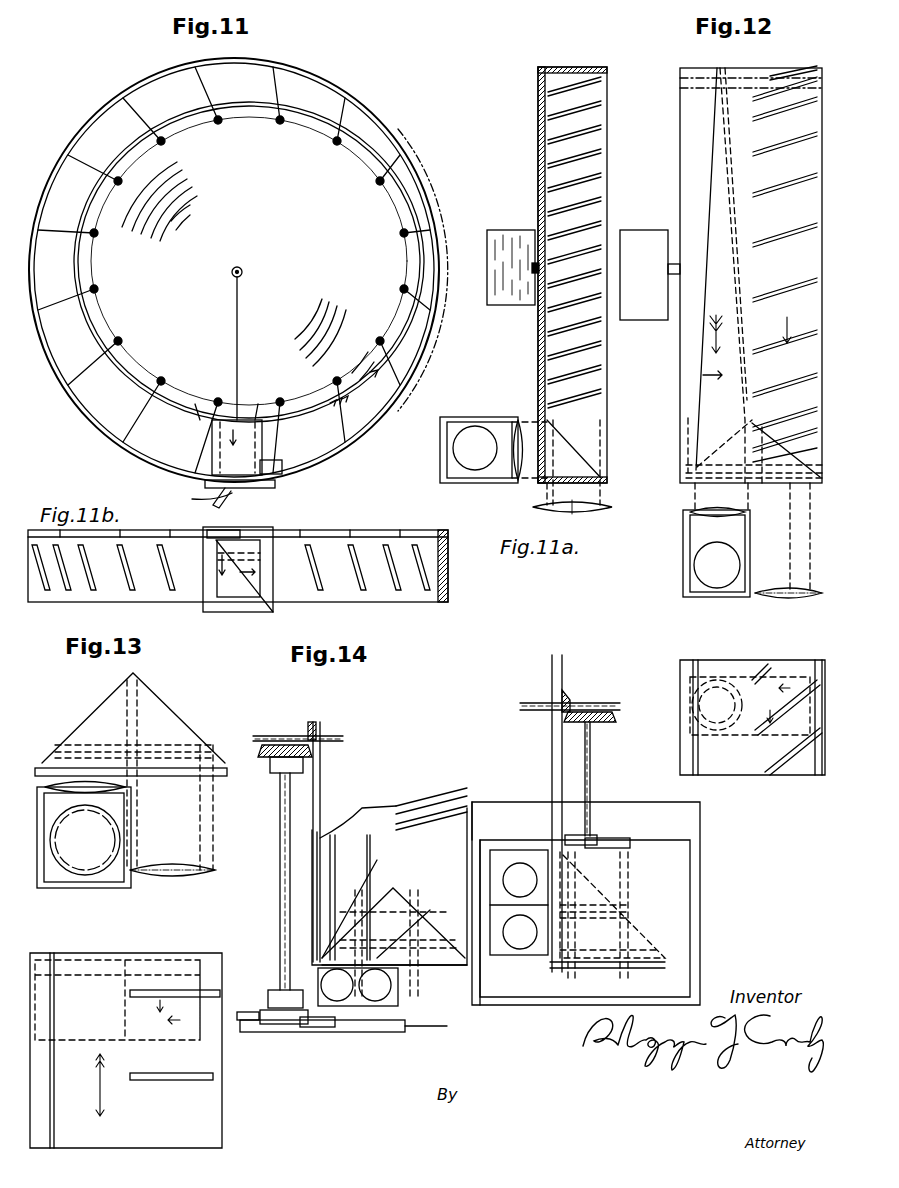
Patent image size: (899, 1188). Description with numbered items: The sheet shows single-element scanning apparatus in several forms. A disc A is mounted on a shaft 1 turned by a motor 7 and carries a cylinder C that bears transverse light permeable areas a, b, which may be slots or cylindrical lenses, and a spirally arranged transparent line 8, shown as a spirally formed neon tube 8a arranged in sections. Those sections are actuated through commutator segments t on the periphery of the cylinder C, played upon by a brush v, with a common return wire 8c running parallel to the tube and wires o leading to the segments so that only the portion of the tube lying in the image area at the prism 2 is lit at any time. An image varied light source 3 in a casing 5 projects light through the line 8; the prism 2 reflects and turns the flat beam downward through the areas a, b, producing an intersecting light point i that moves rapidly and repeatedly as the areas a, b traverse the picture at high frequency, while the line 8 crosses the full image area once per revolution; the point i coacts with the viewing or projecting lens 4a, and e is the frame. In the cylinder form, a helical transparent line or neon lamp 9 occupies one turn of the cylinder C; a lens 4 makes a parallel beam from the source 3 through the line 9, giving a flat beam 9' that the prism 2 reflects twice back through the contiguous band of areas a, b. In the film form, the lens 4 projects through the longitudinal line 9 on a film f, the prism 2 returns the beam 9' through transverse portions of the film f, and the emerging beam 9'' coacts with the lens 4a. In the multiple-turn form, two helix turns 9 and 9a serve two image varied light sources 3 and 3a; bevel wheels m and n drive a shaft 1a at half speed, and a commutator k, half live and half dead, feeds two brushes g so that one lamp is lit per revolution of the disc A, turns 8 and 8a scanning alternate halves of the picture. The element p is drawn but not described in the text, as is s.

In FIG. 11, the shaft 1 is at (243, 269).
In FIG. 11A, the shaft 1 is at (532, 278).
In FIG. 12, the shaft 1 is at (668, 266).
In FIG. 14, the shaft 1 is at (323, 735).
In FIG. 14, the shaft 1a is at (293, 786).
In FIG. 11, the prism 2 is at (278, 460).
In FIG. 11A, the prism 2 is at (575, 457).
In FIG. 12, the prism 2 is at (752, 423).
In FIG. 13, the prism 2 is at (165, 720).
In FIG. 14, the prism 2 is at (410, 903).
In FIG. 11A, the image varied light source 3 is at (478, 430).
In FIG. 12, the image varied light source 3 is at (700, 565).
In FIG. 13, the image varied light source 3 is at (94, 875).
In FIG. 14, the image varied light source 3 is at (345, 1002).
In FIG. 14, the second image varied light source 3a is at (375, 1002).
In FIG. 11A, the lens 4 is at (519, 430).
In FIG. 12, the lens 4 is at (695, 511).
In FIG. 13, the lens 4 is at (128, 790).
In FIG. 14, the lens 4 is at (700, 715).
In FIG. 11A, the lens 4a is at (572, 521).
In FIG. 12, the lens 4a is at (788, 604).
In FIG. 13, the lens 4a is at (216, 871).
In FIG. 14, the lens 4a is at (790, 740).
In FIG. 11A, the casing 5 is at (480, 483).
In FIG. 12, the casing 5 is at (716, 550).
In FIG. 13, the casing 5 is at (55, 888).
In FIG. 14, the casing 5 is at (400, 990).
In FIG. 12, the motor 7 is at (656, 320).
In FIG. 11, the spiral line 8 is at (213, 420).
In FIG. 11A, the spiral line 8 is at (552, 423).
In FIG. 14, the spiral line 8 is at (555, 862).
In FIG. 14, the spirally formed neon tube 8a is at (560, 930).
In FIG. 11, the common return wire 8c is at (178, 396).
In FIG. 12, the helical transparent line 9 is at (701, 275).
In FIG. 13, the helical transparent line 9 is at (127, 842).
In FIG. 14, the helical transparent line 9 is at (497, 854).
In FIG. 12, the flat beam of light 9' is at (796, 538).
In FIG. 13, the flat beam of light 9' is at (150, 839).
In FIG. 14, the flat beam of light 9' is at (761, 782).
In FIG. 13, the reflected beam 9'' is at (224, 807).
In FIG. 14, the second helix turn 9a is at (405, 925).
In FIG. 11, the disc A is at (409, 164).
In FIG. 11A, the disc A is at (538, 142).
In FIG. 11B, the disc A is at (155, 531).
In FIG. 14, the disc A is at (322, 828).
In FIG. 11, the cylinder C is at (440, 335).
In FIG. 11A, the cylinder C is at (598, 67).
In FIG. 12, the cylinder C is at (680, 108).
In FIG. 11B, the cylinder C is at (440, 603).
In FIG. 14, the cylinder C is at (587, 888).
In FIG. 11, the transverse light permeable area a is at (232, 418).
In FIG. 11A, the transverse light permeable area a is at (549, 372).
In FIG. 12, the transverse light permeable area a is at (760, 483).
In FIG. 11B, the transverse light permeable area a is at (273, 612).
In FIG. 13, the transverse light permeable area a is at (135, 990).
In FIG. 14, the transverse light permeable area a is at (400, 812).
In FIG. 11A, the transverse light permeable area b is at (603, 342).
In FIG. 12, the transverse light permeable area b is at (810, 483).
In FIG. 11B, the transverse light permeable area b is at (250, 540).
In FIG. 13, the transverse light permeable area b is at (200, 995).
In FIG. 14, the transverse light permeable area b is at (448, 800).
In FIG. 11, the frame e is at (268, 488).
In FIG. 11B, the frame e is at (238, 612).
In FIG. 13, the film f is at (215, 778).
In FIG. 14, the brushes g is at (262, 1032).
In FIG. 11A, the intersecting light point i is at (547, 497).
In FIG. 11B, the intersecting light point i is at (262, 546).
In FIG. 13, the intersecting light point i is at (205, 997).
In FIG. 14, the intersecting light point i is at (245, 1020).
In FIG. 14, the commutator k is at (303, 1027).
In FIG. 14, the bevel wheel m is at (280, 745).
In FIG. 14, the bevel wheel n is at (310, 724).
In FIG. 11, the wires o is at (85, 385).
In FIG. 11A, the pin p is at (538, 240).
In FIG. 14, the screw s is at (283, 1024).
In FIG. 11, the commutator segments t is at (60, 165).
In FIG. 11B, the commutator segments t is at (172, 536).
In FIG. 11, the brush v is at (205, 489).
In FIG. 11B, the brush v is at (222, 530).